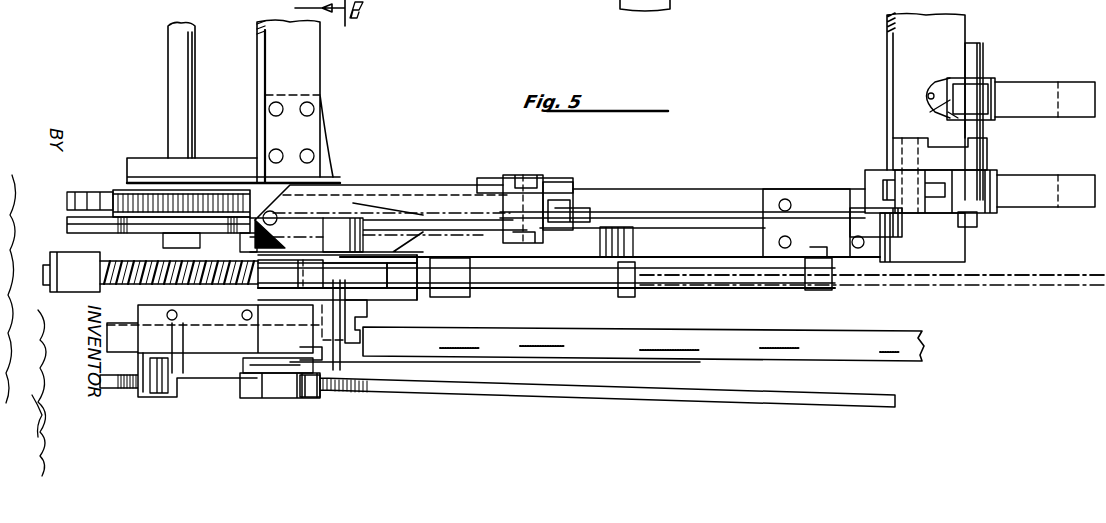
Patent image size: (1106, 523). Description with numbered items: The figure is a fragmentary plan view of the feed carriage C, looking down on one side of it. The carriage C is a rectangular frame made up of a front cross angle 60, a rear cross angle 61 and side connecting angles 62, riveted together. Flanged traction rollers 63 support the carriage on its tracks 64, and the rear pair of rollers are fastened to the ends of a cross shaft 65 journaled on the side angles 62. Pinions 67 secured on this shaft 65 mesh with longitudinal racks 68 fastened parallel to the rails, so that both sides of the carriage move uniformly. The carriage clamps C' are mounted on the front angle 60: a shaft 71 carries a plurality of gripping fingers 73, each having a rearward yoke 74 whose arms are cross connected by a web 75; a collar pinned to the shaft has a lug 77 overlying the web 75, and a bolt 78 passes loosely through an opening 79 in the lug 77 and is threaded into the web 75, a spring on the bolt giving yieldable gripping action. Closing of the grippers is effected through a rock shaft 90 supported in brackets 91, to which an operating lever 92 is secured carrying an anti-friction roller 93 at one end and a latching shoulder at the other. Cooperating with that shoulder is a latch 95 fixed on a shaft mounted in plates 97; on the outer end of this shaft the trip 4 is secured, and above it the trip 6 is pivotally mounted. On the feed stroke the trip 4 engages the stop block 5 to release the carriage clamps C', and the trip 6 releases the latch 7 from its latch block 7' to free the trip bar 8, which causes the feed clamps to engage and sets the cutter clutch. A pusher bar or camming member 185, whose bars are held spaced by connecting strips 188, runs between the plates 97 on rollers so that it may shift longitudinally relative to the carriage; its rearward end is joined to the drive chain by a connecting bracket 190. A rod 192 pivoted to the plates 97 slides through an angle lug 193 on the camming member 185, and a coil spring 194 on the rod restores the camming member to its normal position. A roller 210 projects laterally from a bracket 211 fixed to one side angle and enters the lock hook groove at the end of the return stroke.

The cross shaft 65 is at (170, 84).
The rear cross angle 61 is at (305, 83).
The longitudinal rack 68 is at (65, 196).
The pinion 67 is at (132, 198).
The track 64 is at (82, 226).
The traction roller 63 is at (163, 231).
The coil spring 194 is at (251, 256).
The angle lug 193 is at (85, 292).
The rod 192 is at (166, 282).
The latch 95 is at (333, 223).
The plate 97 is at (380, 253).
The carriage C is at (468, 153).
The operating lever 92 is at (475, 220).
The rock shaft 90 is at (550, 184).
The bracket 91 is at (574, 184).
The side connecting angle 62 is at (727, 207).
The bracket 211 is at (804, 200).
The anti-friction roller 93 is at (638, 243).
The pusher bar or camming member 185 is at (588, 288).
The connecting strip 188 is at (468, 291).
The trip 4 is at (370, 310).
The connecting bracket 190 is at (1022, 278).
The roller 210 is at (842, 264).
The stop block 5 is at (227, 339).
The latch 7 is at (178, 375).
The latch block 7' is at (280, 400).
The trip 6 is at (326, 367).
The trip bar 8 is at (559, 387).
The front cross angle 60 is at (902, 84).
The shaft 71 is at (970, 80).
The yoke 74 is at (986, 80).
The gripping finger 73 is at (1040, 95).
The lug 77 is at (926, 96).
The web 75 is at (957, 79).
The bolt 78 is at (928, 98).
The opening 79 is at (960, 112).
The carriage clamps C' is at (1046, 175).